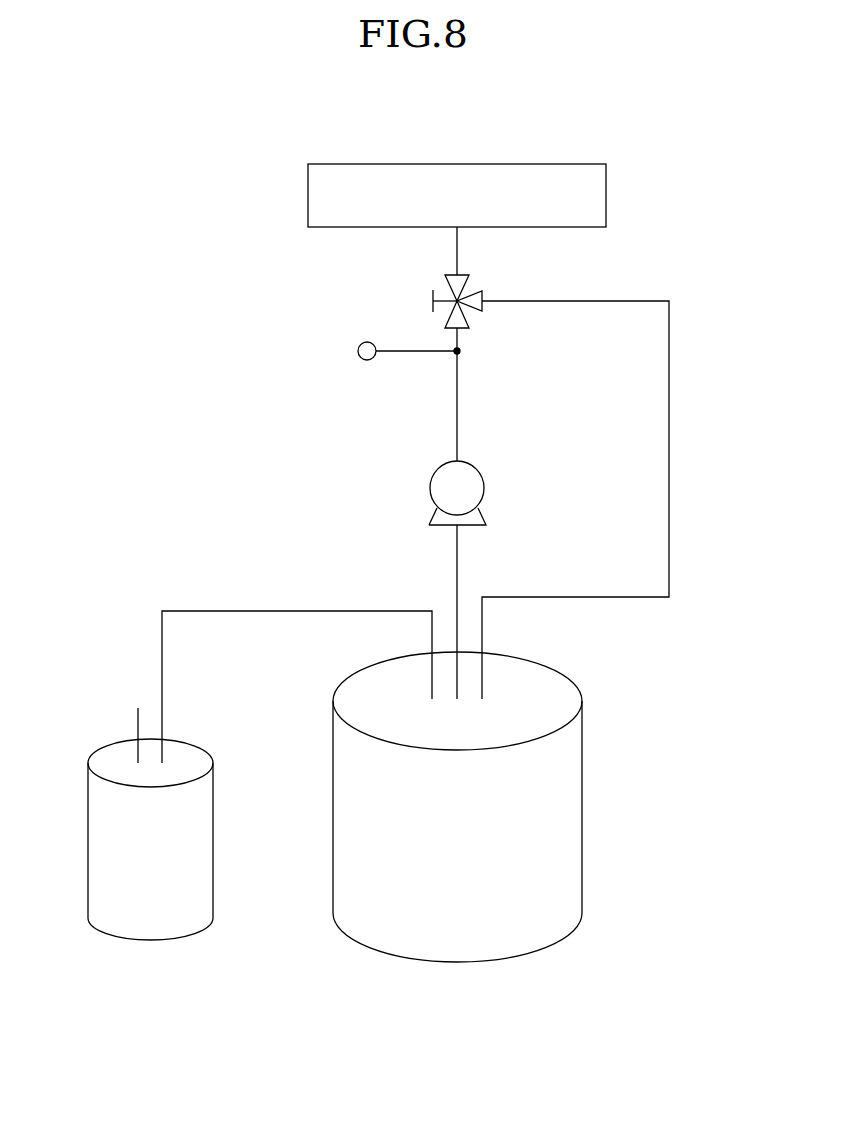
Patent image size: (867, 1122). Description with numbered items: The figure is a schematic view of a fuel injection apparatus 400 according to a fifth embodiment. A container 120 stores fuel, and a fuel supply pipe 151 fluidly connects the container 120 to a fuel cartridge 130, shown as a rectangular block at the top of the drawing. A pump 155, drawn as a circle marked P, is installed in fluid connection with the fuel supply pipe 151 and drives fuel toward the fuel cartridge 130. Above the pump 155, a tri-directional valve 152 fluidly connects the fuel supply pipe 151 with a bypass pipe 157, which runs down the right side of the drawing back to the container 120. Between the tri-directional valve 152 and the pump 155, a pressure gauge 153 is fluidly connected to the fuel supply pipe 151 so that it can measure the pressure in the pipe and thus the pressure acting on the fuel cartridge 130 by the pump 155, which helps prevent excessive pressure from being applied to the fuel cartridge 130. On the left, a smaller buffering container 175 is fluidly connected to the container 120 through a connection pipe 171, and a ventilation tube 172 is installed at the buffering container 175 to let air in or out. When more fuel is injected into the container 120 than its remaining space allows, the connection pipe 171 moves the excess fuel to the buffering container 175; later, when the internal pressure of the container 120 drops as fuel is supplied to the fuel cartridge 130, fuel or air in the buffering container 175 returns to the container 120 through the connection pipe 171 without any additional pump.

The fuel injection apparatus 400 is at (450, 130).
The fuel cartridge 130 is at (606, 195).
The tri-directional valve 152 is at (447, 285).
The pressure gauge 153 is at (357, 351).
The fuel supply pipe 151 is at (456, 420).
The pump 155 is at (430, 488).
The bypass pipe 157 is at (669, 433).
The connection pipe 171 is at (260, 610).
The ventilation tube 172 is at (137, 722).
The container 120 is at (353, 806).
The buffering container 175 is at (188, 868).